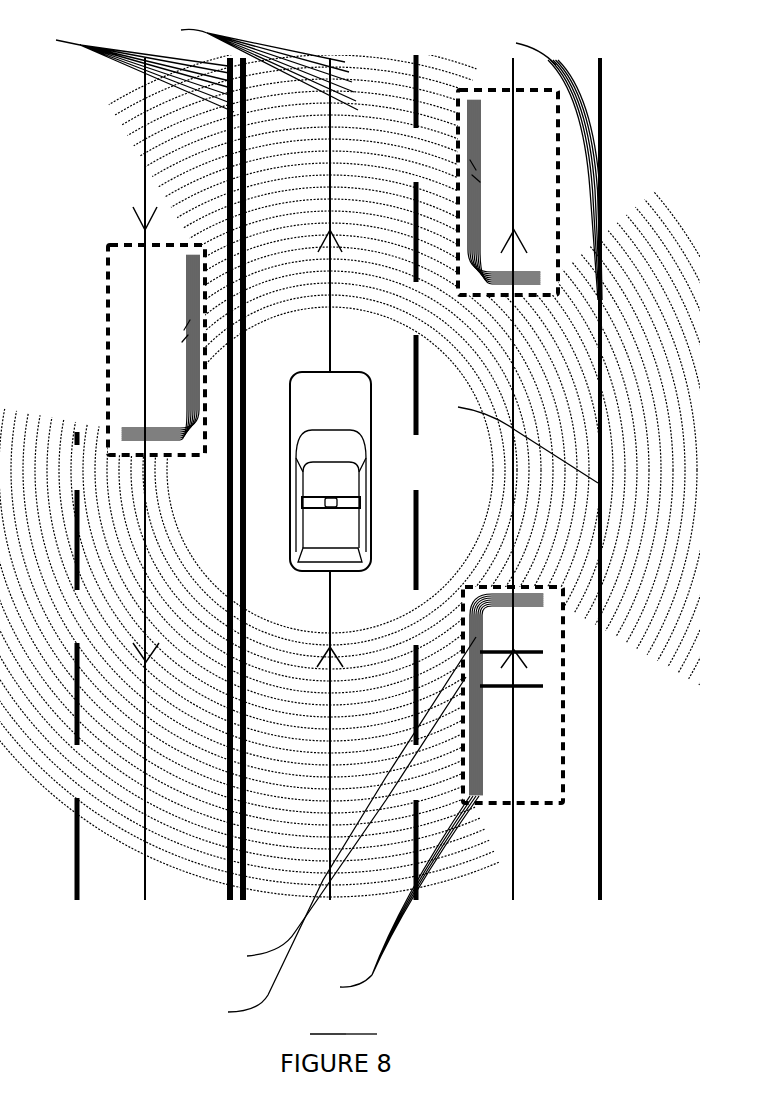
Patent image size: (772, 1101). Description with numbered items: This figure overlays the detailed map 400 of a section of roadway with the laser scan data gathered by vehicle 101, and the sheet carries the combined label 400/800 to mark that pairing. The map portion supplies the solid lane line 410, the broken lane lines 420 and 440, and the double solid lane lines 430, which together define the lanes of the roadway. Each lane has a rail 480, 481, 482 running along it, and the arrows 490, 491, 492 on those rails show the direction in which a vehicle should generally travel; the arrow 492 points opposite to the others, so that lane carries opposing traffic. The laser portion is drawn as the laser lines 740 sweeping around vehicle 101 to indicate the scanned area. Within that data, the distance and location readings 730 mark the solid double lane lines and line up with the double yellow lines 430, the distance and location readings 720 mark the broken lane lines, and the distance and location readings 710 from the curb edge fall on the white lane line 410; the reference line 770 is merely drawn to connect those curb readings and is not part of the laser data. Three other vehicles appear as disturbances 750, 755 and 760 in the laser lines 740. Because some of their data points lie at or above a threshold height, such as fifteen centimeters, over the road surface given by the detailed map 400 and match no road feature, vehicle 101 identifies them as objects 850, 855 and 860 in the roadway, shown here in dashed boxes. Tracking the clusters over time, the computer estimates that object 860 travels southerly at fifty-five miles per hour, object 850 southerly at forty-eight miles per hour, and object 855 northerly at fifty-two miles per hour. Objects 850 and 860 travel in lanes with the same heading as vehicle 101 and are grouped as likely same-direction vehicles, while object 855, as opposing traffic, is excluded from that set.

The vehicle 101 is at (370, 500).
The solid lane line 410 is at (600, 866).
The broken lane lines 420 is at (419, 866).
The double solid lane lines 430 is at (228, 866).
The broken lane lines 440 is at (77, 866).
The rail 480 is at (513, 866).
The rail 481 is at (330, 866).
The rail 482 is at (145, 866).
The arrow 490 is at (524, 662).
The arrow 491 is at (321, 660).
The arrow 492 is at (140, 655).
The distance and location readings 710 is at (541, 166).
The distance and location readings 720 is at (391, 896).
The distance and location readings 730 is at (127, 71).
The laser lines 740 is at (251, 64).
The disturbance 750 is at (466, 100).
The disturbance 755 is at (130, 440).
The disturbance 760 is at (338, 821).
The reference line 770 is at (511, 438).
The object 850 is at (506, 90).
The object 855 is at (107, 372).
The object 860 is at (334, 829).
The detailed map 400 is at (328, 1024).
The scene 800 is at (361, 1024).